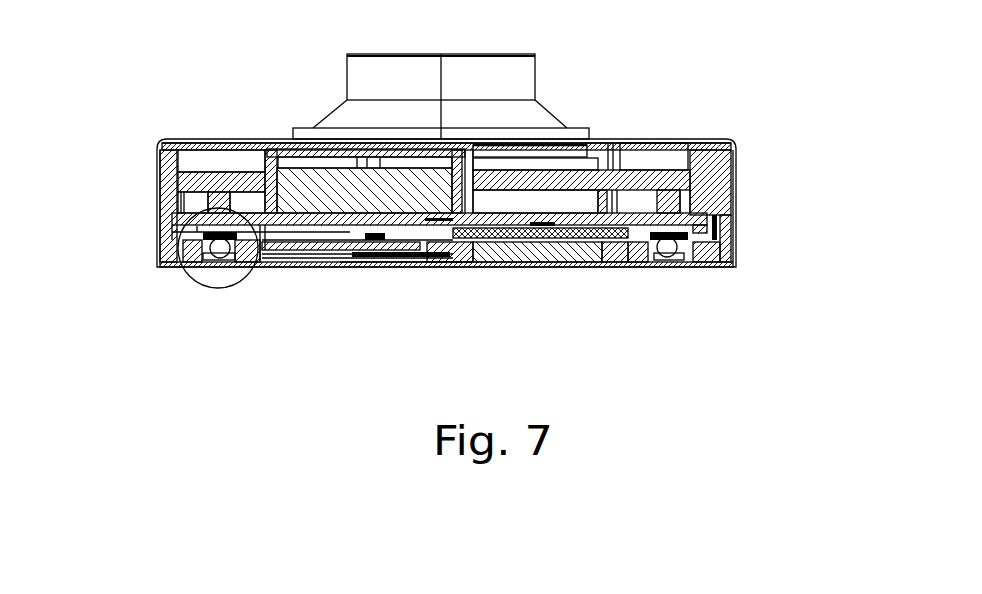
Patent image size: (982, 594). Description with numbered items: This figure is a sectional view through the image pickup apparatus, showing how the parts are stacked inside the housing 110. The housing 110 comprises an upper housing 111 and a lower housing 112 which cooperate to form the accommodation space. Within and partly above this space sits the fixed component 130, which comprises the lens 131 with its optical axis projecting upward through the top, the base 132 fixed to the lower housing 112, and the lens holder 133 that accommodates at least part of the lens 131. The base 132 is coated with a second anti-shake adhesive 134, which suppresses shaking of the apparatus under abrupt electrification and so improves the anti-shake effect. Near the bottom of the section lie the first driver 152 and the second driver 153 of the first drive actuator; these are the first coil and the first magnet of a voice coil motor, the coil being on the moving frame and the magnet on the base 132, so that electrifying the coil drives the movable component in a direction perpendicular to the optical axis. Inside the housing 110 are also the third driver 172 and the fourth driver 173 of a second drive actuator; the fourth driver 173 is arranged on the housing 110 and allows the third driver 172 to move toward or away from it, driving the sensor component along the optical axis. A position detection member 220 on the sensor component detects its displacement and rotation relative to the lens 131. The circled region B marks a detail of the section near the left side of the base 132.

The housing 110 is at (504, 213).
The upper housing 111 is at (733, 230).
The lower housing 112 is at (733, 268).
The fixed component 130 is at (364, 192).
The lens 131 is at (488, 70).
The base 132 is at (163, 223).
The lens holder 133 is at (163, 203).
The second anti-shake adhesive 134 is at (310, 262).
The first driver 152 is at (519, 246).
The second driver 153 is at (573, 256).
The third driver 172 is at (278, 262).
The fourth driver 173 is at (360, 203).
The position detection member 220 is at (410, 268).
The detail region B is at (200, 289).